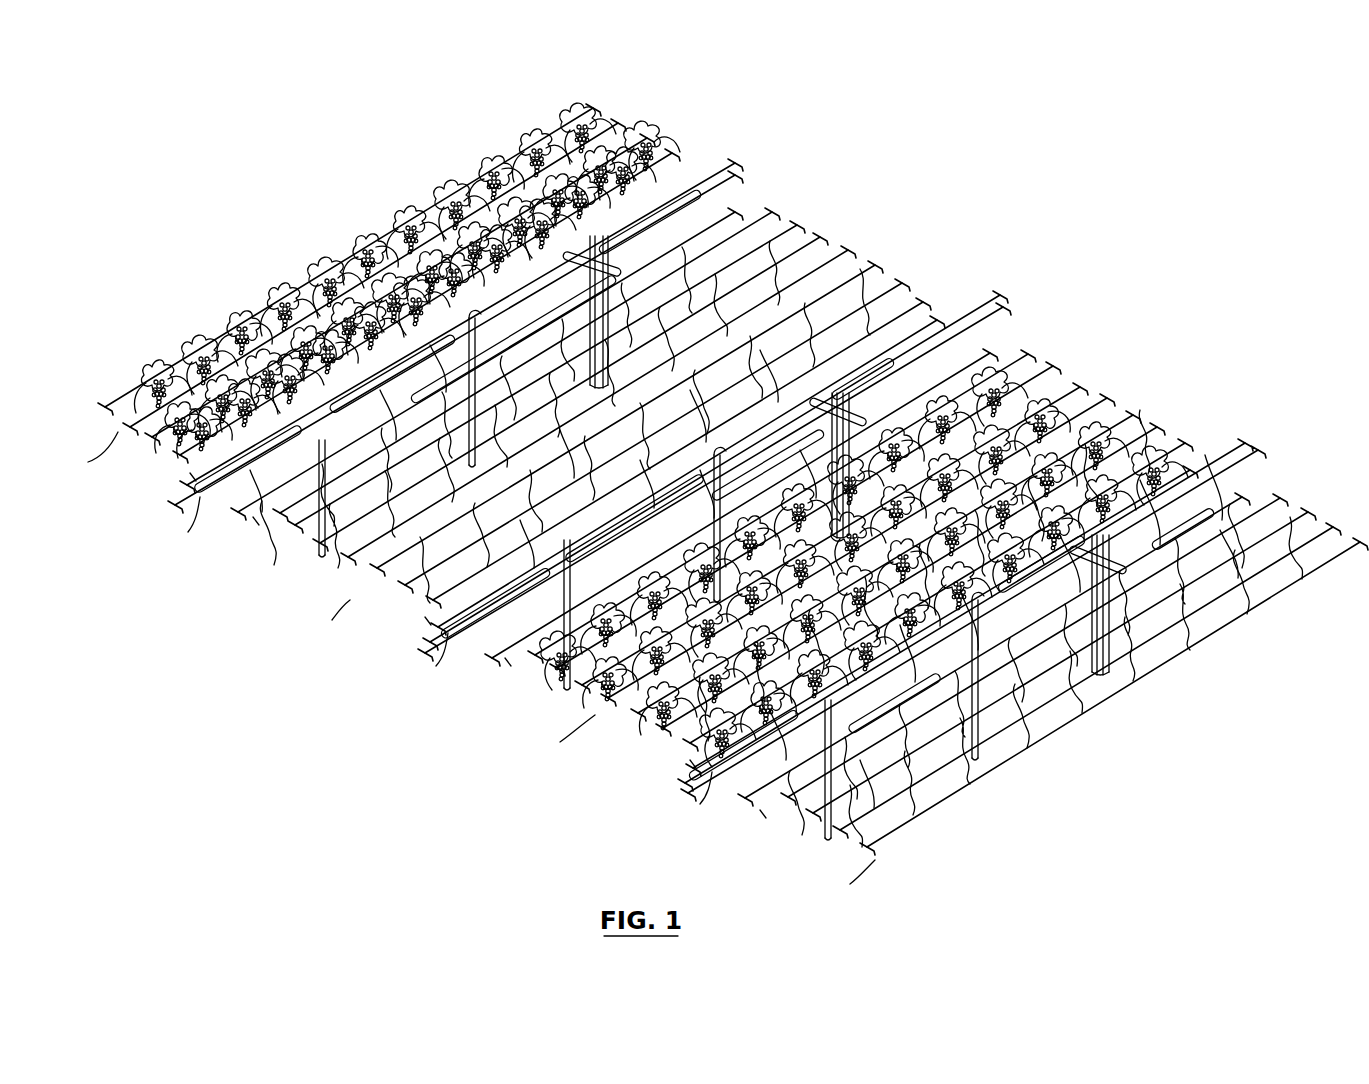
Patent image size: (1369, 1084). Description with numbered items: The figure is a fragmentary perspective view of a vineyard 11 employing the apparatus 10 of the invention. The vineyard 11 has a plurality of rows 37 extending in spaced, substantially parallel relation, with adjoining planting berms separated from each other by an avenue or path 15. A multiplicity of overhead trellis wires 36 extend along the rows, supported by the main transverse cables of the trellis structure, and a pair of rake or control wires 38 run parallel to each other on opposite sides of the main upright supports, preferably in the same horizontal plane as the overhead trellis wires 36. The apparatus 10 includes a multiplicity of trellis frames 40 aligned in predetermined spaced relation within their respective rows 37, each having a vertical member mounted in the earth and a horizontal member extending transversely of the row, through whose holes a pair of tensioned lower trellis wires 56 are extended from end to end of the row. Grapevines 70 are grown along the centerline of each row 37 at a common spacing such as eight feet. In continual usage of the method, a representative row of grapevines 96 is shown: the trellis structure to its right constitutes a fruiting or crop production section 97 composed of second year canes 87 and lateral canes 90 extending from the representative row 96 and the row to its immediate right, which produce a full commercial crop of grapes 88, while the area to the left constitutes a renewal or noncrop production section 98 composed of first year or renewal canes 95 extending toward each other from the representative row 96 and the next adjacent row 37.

The apparatus 10 is at (1272, 605).
The vineyard 11 is at (1053, 326).
The avenue or path 15 is at (90, 461).
The overhead trellis wires 36 is at (620, 124).
The rows 37 is at (215, 530).
The rake or control wires 38 is at (192, 522).
The trellis frames 40 is at (618, 236).
The lower trellis wires 56 is at (190, 474).
The grapevines 70 is at (609, 375).
The second year canes 87 is at (505, 178).
The crop 88 is at (466, 230).
The lateral canes 90 is at (636, 152).
The renewal canes 95 is at (582, 466).
The representative row of grapevines 96 is at (480, 676).
The crop production section 97 is at (602, 746).
The renewal or noncrop production section 98 is at (370, 606).